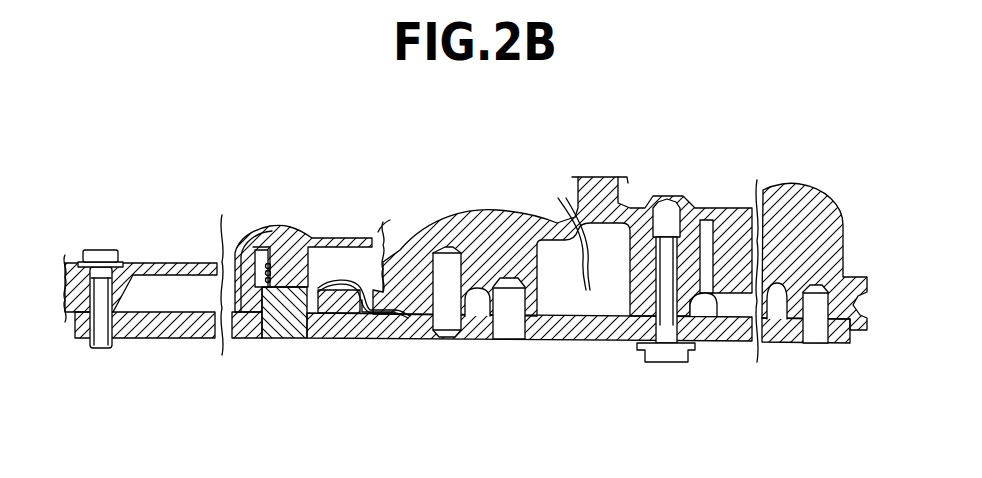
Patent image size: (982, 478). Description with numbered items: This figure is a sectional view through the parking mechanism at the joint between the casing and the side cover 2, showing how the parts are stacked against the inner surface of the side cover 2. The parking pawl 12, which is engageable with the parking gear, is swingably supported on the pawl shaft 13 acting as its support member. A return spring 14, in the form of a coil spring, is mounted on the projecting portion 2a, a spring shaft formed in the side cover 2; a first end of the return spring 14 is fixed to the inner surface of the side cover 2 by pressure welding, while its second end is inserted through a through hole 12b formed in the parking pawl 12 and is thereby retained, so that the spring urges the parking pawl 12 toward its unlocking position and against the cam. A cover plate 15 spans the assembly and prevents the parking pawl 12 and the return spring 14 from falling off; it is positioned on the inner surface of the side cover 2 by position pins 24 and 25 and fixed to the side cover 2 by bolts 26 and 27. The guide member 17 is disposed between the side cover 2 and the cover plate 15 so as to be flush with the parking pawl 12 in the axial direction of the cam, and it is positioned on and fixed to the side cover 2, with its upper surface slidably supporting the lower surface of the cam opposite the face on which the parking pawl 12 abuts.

The side cover 2 is at (512, 212).
The projecting portion 2a is at (252, 238).
The parking pawl 12 is at (398, 268).
The through hole 12b is at (353, 340).
The pawl shaft 13 is at (414, 250).
The return spring 14 is at (326, 256).
The cover plate 15 is at (413, 340).
The guide member 17 is at (712, 343).
The position pin 24 is at (818, 342).
The position pin 25 is at (508, 340).
The bolt 26 is at (668, 350).
The bolt 27 is at (104, 346).